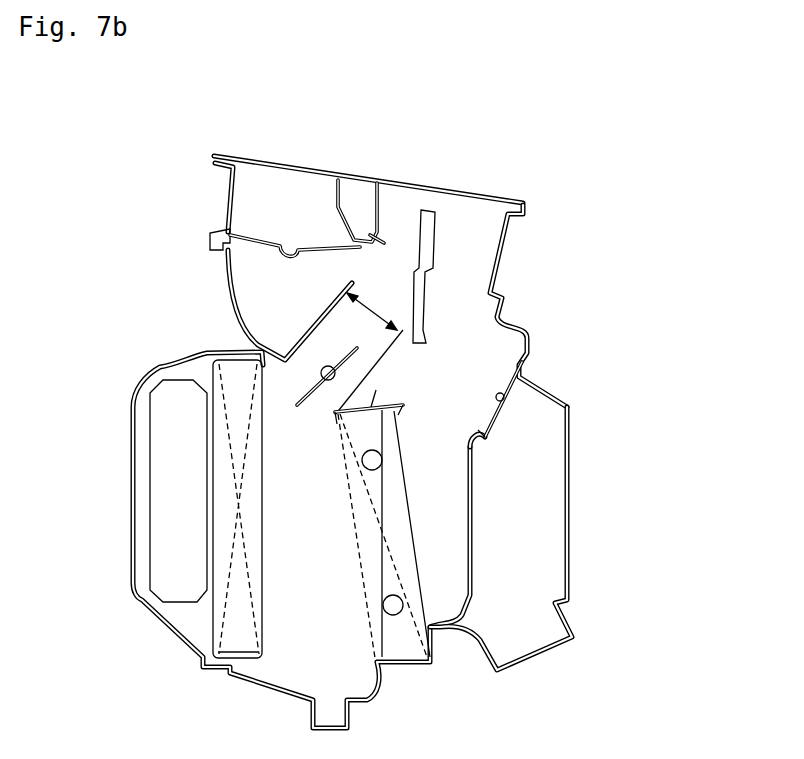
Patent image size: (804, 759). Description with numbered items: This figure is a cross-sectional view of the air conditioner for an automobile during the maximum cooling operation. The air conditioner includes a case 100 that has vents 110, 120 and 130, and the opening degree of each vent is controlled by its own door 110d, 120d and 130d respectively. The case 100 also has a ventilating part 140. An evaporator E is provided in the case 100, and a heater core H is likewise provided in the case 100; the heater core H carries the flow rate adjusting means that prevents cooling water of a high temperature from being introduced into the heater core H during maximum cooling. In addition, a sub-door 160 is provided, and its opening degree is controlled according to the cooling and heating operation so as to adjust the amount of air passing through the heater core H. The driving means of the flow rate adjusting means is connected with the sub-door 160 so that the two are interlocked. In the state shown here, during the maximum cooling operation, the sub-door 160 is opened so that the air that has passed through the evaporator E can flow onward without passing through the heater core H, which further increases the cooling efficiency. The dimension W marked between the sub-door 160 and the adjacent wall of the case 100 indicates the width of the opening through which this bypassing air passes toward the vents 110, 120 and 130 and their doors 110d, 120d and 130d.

The case 100 is at (137, 405).
The vent 110 is at (287, 187).
The vent door 110d is at (228, 233).
The vent 120 is at (430, 187).
The vent door 120d is at (417, 317).
The vent 130 is at (540, 423).
The vent door 130d is at (507, 392).
The ventilating part 140 is at (163, 540).
The sub-door 160 is at (297, 405).
The width W is at (369, 351).
The evaporator E is at (233, 655).
The heater core H is at (400, 655).